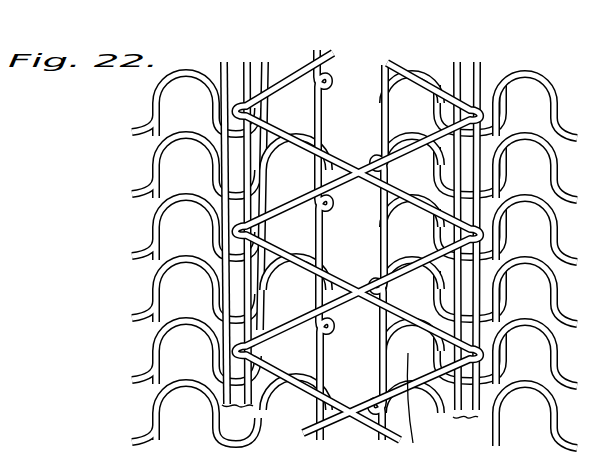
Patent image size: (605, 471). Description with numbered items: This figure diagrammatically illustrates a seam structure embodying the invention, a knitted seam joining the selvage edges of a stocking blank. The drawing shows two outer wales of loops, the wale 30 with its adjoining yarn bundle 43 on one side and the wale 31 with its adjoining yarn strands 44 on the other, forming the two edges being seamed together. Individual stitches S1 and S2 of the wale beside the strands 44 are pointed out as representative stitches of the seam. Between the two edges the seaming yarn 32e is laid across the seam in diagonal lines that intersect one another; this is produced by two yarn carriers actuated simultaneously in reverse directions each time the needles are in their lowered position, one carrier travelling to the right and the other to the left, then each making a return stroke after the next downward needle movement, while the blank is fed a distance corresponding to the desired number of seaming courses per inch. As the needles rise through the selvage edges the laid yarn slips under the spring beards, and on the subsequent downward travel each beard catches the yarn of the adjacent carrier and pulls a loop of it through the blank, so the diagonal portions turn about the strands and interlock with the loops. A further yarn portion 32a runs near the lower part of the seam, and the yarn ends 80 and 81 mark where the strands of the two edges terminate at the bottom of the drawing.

The yarn 30 is at (330, 40).
The yarn 43 is at (267, 40).
The yarn 31 is at (443, 52).
The yarn 44 is at (497, 52).
The stitch S1 is at (481, 70).
The stitch S2 is at (478, 162).
The yarn 32e is at (338, 306).
The inlaid yarn portion 32a is at (420, 325).
The yarn end 80 is at (235, 411).
The yarn end 81 is at (467, 421).